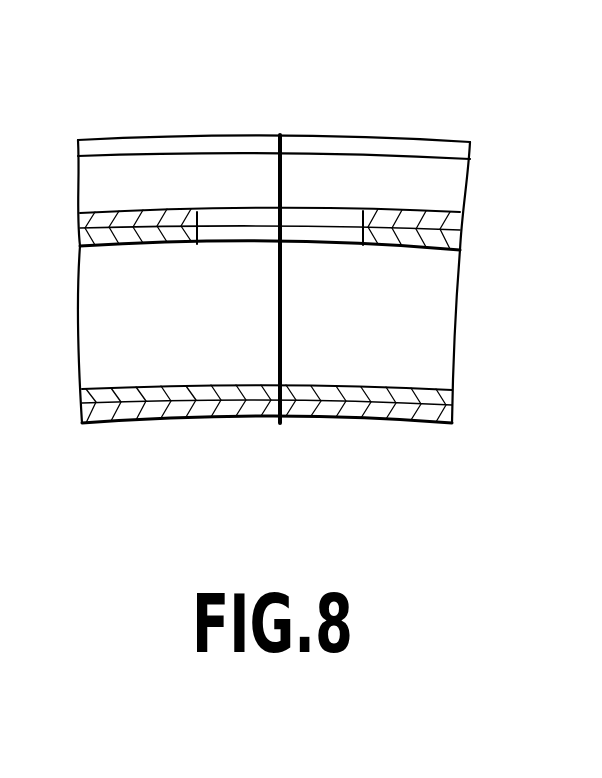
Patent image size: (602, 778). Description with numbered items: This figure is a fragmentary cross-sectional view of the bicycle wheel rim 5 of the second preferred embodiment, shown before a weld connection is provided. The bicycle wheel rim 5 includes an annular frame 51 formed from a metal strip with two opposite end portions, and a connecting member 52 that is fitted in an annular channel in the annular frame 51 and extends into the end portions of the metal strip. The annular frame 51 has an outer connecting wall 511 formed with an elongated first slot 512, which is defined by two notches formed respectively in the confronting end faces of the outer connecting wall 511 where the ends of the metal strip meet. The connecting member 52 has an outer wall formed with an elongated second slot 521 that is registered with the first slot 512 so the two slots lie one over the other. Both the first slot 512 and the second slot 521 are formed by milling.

The bicycle wheel rim 5 is at (319, 216).
The annular frame 51 is at (313, 143).
The outer connecting wall 511 is at (398, 212).
The first slot 512 is at (237, 212).
The connecting member 52 is at (455, 268).
The second slot 521 is at (335, 237).